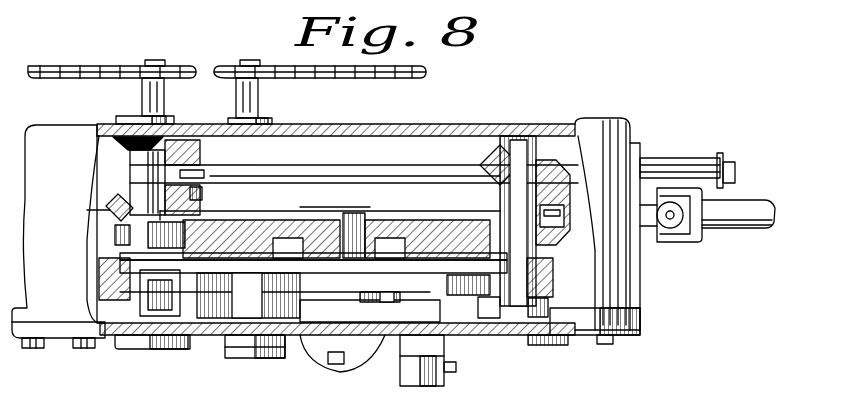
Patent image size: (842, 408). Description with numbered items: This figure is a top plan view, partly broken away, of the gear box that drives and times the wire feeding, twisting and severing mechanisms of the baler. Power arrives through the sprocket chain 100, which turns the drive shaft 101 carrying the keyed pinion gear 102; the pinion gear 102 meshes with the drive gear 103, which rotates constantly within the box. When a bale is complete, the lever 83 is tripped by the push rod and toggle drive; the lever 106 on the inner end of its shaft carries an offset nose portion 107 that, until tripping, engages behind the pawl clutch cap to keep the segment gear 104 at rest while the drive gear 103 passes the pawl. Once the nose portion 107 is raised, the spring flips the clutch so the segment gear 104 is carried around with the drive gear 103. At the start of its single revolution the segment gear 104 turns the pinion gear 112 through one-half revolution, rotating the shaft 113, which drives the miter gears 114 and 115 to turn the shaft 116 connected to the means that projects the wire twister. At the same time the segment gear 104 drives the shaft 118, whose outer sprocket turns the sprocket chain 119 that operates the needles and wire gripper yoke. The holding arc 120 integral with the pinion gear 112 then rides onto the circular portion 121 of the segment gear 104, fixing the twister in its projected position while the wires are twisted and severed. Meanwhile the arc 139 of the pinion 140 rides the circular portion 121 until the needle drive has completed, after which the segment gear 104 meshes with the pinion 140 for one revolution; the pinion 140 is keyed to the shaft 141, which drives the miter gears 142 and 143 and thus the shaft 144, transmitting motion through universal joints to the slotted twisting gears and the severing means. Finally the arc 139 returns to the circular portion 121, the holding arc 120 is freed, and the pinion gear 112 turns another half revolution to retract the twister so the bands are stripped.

The lever 83 is at (446, 385).
The sprocket chain 100 is at (55, 66).
The drive shaft 101 is at (146, 92).
The pinion gear 102 is at (160, 233).
The drive gear 103 is at (236, 226).
The segment gear 104 is at (232, 306).
The lever 106 is at (392, 318).
The offset nose portion 107 is at (335, 316).
The pinion gear 112 is at (175, 318).
The shaft 113 is at (140, 168).
The miter gear 114 is at (118, 198).
The miter gear 115 is at (190, 124).
The shaft 116 is at (296, 174).
The shaft 118 is at (255, 105).
The sprocket chain 119 is at (374, 78).
The holding arc 120 is at (108, 262).
The circular portion 121 is at (250, 263).
The arc 139 is at (450, 278).
The pinion 140 is at (518, 291).
The shaft 141 is at (502, 178).
The miter gear 142 is at (583, 122).
The miter gear 143 is at (565, 256).
The shaft 144 is at (748, 212).